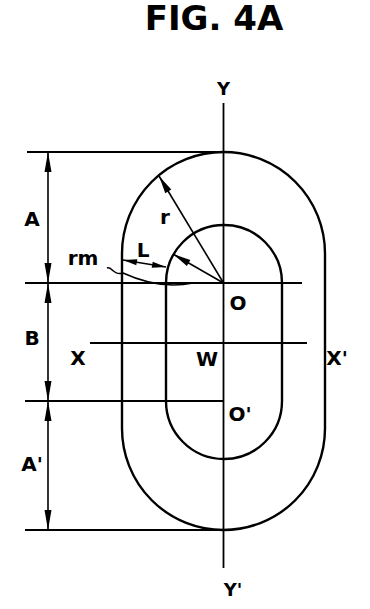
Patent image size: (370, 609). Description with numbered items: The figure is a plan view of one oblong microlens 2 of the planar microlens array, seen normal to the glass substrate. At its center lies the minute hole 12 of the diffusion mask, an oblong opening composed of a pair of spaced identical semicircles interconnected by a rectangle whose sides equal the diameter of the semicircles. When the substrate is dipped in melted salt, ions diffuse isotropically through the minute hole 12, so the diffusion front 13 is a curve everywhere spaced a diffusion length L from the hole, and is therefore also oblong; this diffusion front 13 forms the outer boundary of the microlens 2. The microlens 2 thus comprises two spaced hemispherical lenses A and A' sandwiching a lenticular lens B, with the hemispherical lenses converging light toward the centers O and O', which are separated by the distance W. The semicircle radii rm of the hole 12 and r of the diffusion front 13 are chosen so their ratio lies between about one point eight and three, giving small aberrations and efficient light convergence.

The microlens 2 is at (192, 142).
The minute hole 12 is at (263, 240).
The diffusion front 13 is at (275, 167).